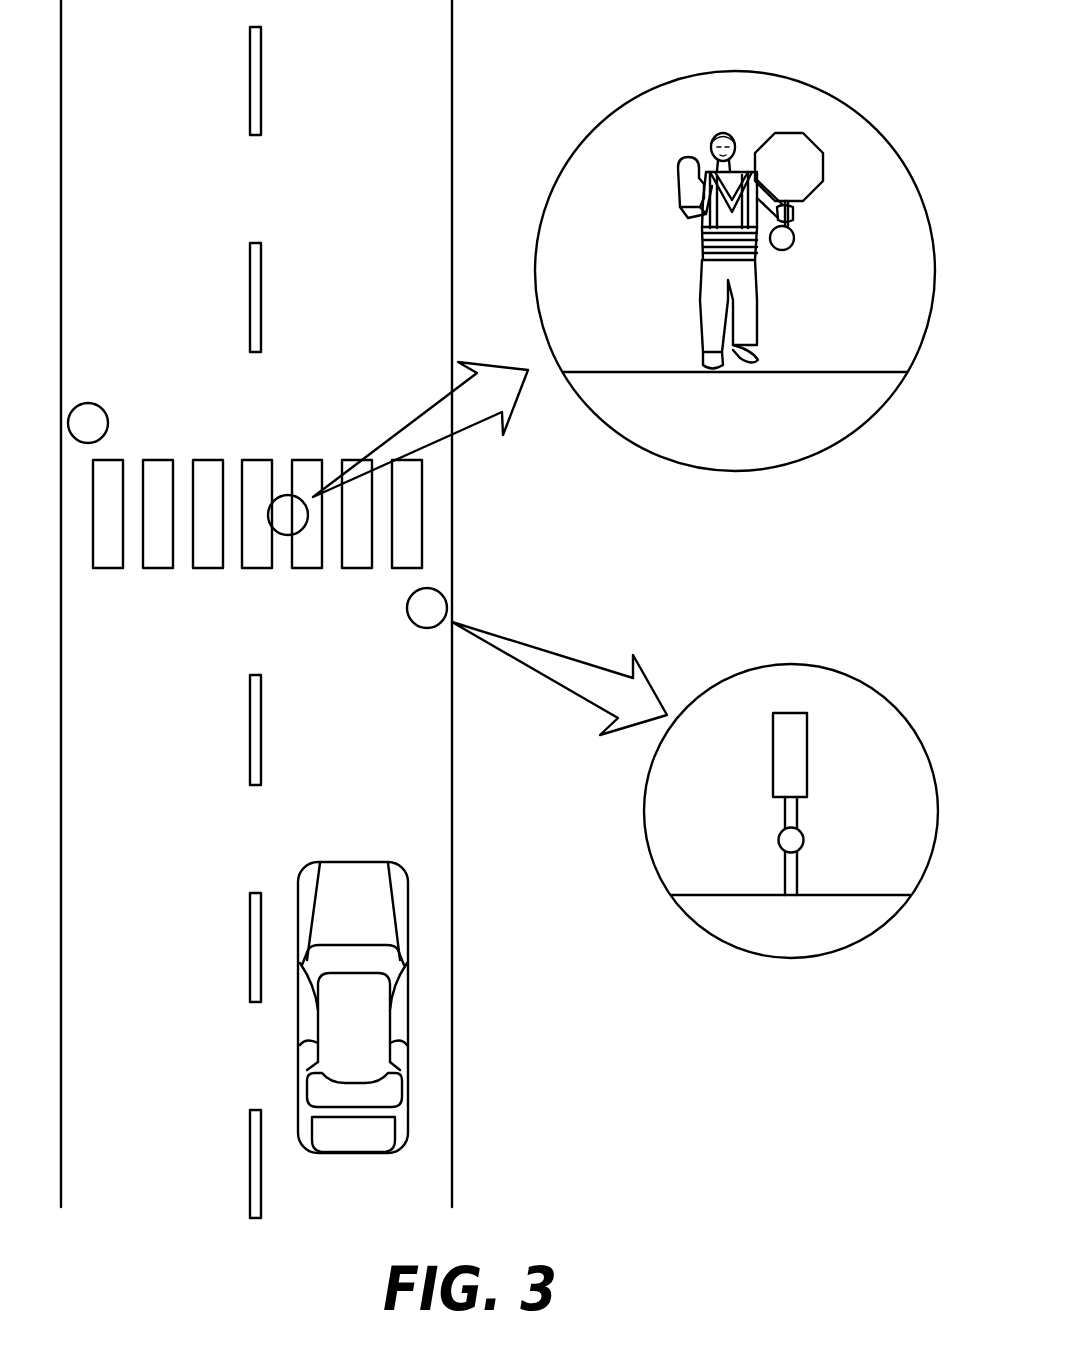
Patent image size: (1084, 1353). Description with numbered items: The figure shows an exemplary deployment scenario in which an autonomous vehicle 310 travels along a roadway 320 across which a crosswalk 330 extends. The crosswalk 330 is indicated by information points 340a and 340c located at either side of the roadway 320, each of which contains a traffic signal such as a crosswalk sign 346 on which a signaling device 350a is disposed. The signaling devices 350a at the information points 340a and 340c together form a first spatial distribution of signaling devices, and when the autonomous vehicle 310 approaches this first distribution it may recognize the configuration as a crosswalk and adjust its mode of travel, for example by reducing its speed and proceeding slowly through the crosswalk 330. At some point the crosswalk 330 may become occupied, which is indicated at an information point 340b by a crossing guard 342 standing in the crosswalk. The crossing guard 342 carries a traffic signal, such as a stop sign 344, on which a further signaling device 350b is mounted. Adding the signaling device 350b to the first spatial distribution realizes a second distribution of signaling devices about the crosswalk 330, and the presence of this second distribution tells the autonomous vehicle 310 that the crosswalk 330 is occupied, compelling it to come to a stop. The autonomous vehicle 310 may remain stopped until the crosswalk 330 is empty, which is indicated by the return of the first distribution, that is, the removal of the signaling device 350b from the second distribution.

The autonomous vehicle 310 is at (410, 1087).
The roadway 320 is at (452, 1003).
The crosswalk 330 is at (422, 538).
The information point 340a is at (438, 626).
The information point 340b is at (288, 535).
The information point 340c is at (108, 423).
The crossing guard 342 is at (700, 283).
The stop sign 344 is at (820, 175).
The crosswalk sign 346 is at (808, 760).
The signaling device 350a is at (803, 842).
The signaling device 350b is at (783, 250).